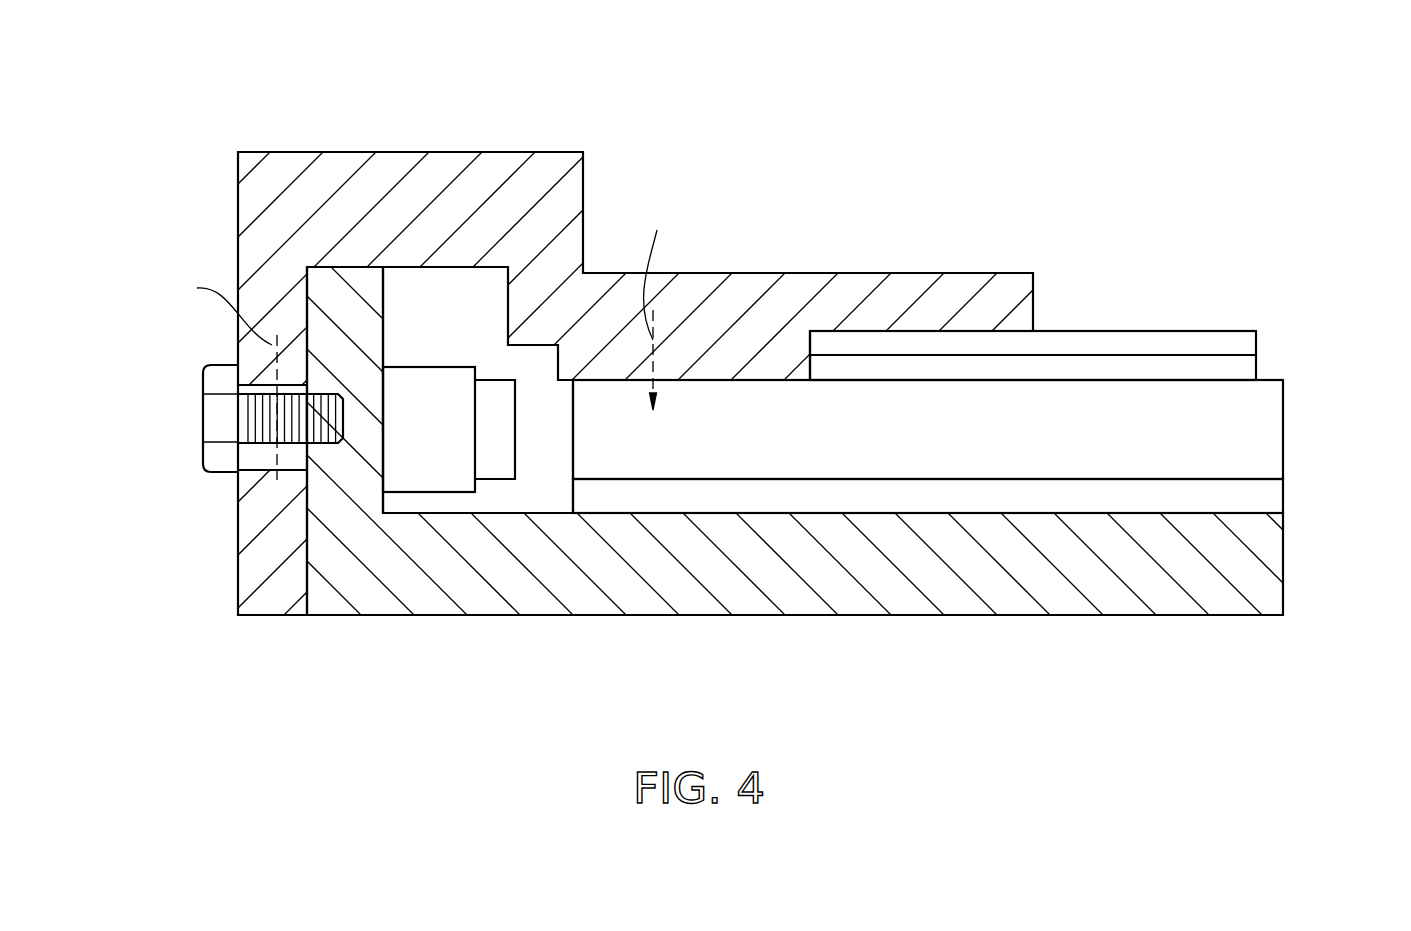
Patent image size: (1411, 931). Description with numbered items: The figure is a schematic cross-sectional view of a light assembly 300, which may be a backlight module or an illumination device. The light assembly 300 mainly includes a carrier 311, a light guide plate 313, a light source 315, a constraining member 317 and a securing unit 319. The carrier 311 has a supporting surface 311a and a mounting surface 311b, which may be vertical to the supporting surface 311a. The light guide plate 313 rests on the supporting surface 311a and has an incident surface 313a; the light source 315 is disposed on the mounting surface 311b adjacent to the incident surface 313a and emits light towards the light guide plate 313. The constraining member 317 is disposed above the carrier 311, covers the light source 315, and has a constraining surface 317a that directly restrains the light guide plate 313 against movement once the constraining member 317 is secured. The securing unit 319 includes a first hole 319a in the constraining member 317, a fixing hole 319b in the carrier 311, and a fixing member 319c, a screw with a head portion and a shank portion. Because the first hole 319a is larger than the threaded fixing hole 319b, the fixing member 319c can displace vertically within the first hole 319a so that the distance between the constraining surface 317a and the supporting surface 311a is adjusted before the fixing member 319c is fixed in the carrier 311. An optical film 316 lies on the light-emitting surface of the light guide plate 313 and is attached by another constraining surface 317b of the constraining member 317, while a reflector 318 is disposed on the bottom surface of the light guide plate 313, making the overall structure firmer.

The light assembly 300 is at (151, 98).
The carrier 311 is at (1267, 582).
The supporting surface 311a is at (823, 530).
The mounting surface 311b is at (385, 450).
The light guide plate 313 is at (1267, 433).
The incident surface 313a is at (573, 438).
The light source 315 is at (460, 470).
The optical film 316 is at (1167, 368).
The constraining member 317 is at (391, 170).
The constraining surface 317a is at (748, 362).
The constraining surface 317b is at (925, 314).
The reflector 318 is at (1270, 493).
The securing unit 319 is at (218, 518).
The first hole 319a is at (272, 470).
The fixing hole 319b is at (342, 445).
The fixing member 319c is at (248, 424).